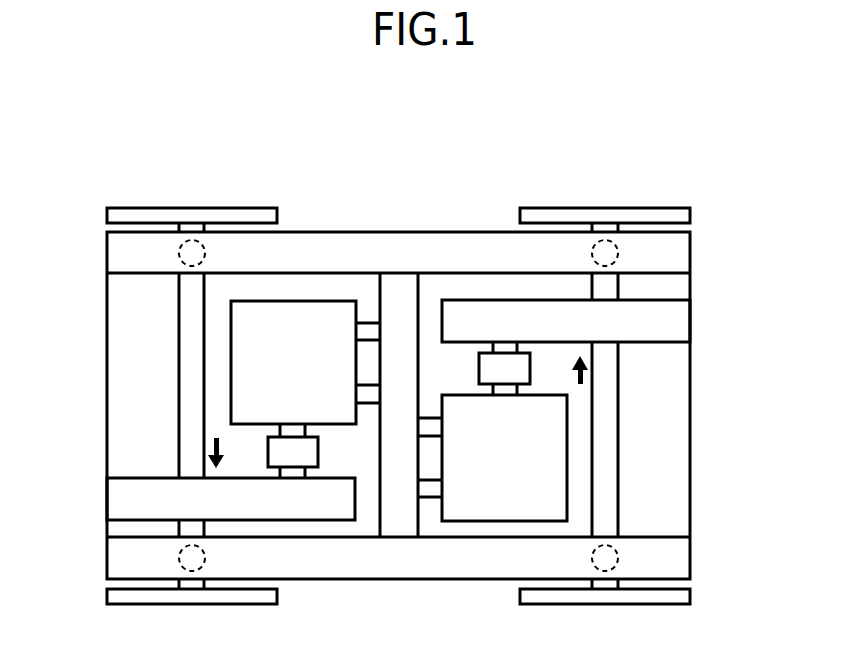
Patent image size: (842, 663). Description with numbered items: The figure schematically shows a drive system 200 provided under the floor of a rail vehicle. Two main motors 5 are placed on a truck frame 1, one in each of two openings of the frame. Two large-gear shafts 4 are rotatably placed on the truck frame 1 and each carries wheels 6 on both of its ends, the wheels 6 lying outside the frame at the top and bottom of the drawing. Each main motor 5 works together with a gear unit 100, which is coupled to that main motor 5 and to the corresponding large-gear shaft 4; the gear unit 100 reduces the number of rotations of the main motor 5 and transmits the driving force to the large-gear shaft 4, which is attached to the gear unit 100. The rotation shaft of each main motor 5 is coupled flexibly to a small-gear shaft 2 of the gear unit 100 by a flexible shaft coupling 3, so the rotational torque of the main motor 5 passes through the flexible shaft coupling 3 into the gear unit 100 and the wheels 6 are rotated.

The drive system 200 is at (545, 135).
The truck frame 1 is at (461, 232).
The small-gear shaft 2 is at (290, 478).
The flexible shaft coupling 3 is at (268, 452).
The large-gear shaft 4 is at (192, 340).
The main motor 5 is at (317, 300).
The wheel 6 is at (107, 213).
The gear unit 100 is at (107, 502).